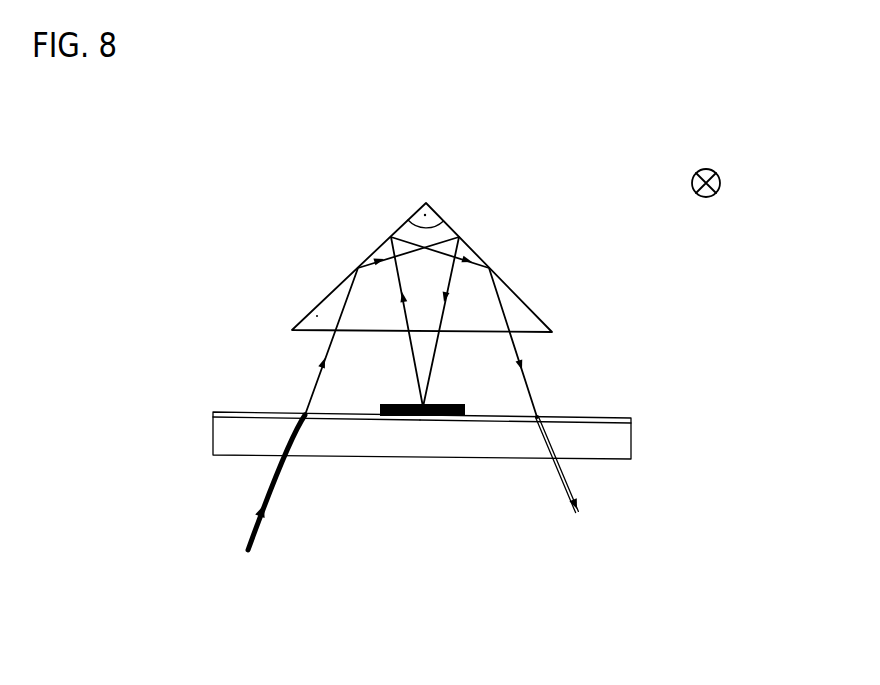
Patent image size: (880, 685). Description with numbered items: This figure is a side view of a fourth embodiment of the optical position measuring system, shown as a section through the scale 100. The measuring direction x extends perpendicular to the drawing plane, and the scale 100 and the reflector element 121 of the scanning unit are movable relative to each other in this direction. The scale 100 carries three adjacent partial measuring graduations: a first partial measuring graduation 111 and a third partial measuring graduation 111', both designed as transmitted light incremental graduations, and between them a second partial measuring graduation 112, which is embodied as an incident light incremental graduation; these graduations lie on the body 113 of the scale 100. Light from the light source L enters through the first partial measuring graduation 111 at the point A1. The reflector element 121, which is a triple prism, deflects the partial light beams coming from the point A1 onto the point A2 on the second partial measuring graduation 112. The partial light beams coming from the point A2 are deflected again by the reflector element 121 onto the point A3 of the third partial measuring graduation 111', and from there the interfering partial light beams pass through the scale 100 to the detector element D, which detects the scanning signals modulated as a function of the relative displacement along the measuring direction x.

The scale 100 is at (440, 413).
The first partial measuring graduation 111 is at (285, 373).
The third partial measuring graduation 111' is at (565, 391).
The second partial measuring graduation 112 is at (400, 402).
The substrate body 113 is at (228, 435).
The reflector element 121 is at (492, 244).
The point on the first partial measuring graduation A1 is at (300, 413).
The point on the second partial measuring graduation A2 is at (425, 405).
The point on the third partial measuring graduation A3 is at (542, 414).
The light source L is at (256, 578).
The detector element D is at (601, 547).
The measuring direction X is at (715, 195).